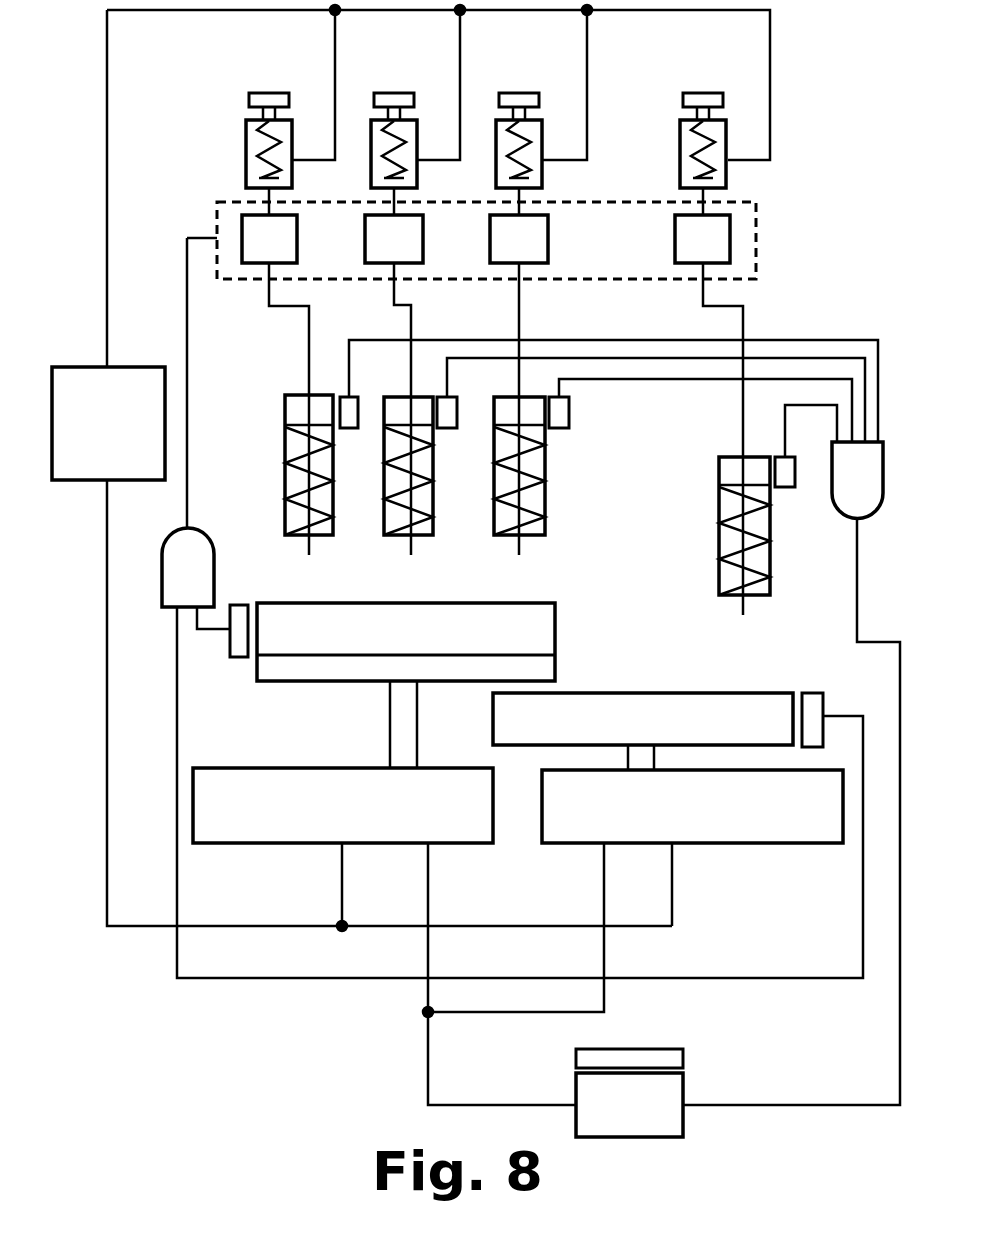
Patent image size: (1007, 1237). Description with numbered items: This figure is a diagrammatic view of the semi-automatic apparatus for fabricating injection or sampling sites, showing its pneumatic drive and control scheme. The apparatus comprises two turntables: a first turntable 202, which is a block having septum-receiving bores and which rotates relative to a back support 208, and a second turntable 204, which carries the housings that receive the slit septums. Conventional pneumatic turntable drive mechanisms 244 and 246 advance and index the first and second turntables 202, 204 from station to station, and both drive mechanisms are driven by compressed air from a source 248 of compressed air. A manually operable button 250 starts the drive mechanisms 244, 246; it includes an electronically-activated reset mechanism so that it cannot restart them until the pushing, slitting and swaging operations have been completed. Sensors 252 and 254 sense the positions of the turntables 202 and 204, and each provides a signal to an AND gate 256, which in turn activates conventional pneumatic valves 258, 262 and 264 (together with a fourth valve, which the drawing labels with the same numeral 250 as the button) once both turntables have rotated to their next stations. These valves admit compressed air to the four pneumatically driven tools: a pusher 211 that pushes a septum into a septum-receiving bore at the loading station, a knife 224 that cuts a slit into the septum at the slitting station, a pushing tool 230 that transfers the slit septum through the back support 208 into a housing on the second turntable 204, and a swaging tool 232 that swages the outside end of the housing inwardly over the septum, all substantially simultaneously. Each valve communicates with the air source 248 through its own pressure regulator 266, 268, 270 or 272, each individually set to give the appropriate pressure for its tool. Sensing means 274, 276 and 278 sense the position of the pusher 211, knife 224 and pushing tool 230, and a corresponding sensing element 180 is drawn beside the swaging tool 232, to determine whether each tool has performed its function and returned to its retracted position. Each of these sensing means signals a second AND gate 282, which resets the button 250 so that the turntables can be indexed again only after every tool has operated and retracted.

The pressure sensor 180 is at (785, 490).
The first turntable 202 is at (383, 646).
The second turntable 204 is at (620, 734).
The back support 208 is at (540, 667).
The pusher 211 is at (313, 538).
The knife 224 is at (415, 538).
The pushing tool 230 is at (523, 538).
The swaging tool 232 is at (738, 598).
The turntable drive mechanism 244 is at (320, 821).
The turntable drive mechanism 246 is at (670, 821).
The source of compressed air 248 is at (85, 430).
The manually operable button 250 is at (372, 253).
The sensor 252 is at (230, 647).
The sensor 254 is at (812, 693).
The AND gate 256 is at (197, 543).
The pneumatic valve 258 is at (247, 253).
The pneumatic valve 262 is at (497, 253).
The pneumatic valve 264 is at (681, 253).
The pressure regulator 266 is at (246, 153).
The pressure regulator 268 is at (371, 125).
The pressure regulator 270 is at (496, 130).
The pressure regulator 272 is at (680, 143).
The sensing means 274 is at (358, 408).
The sensing means 276 is at (457, 412).
The sensing means 278 is at (569, 412).
The AND gate 282 is at (870, 505).